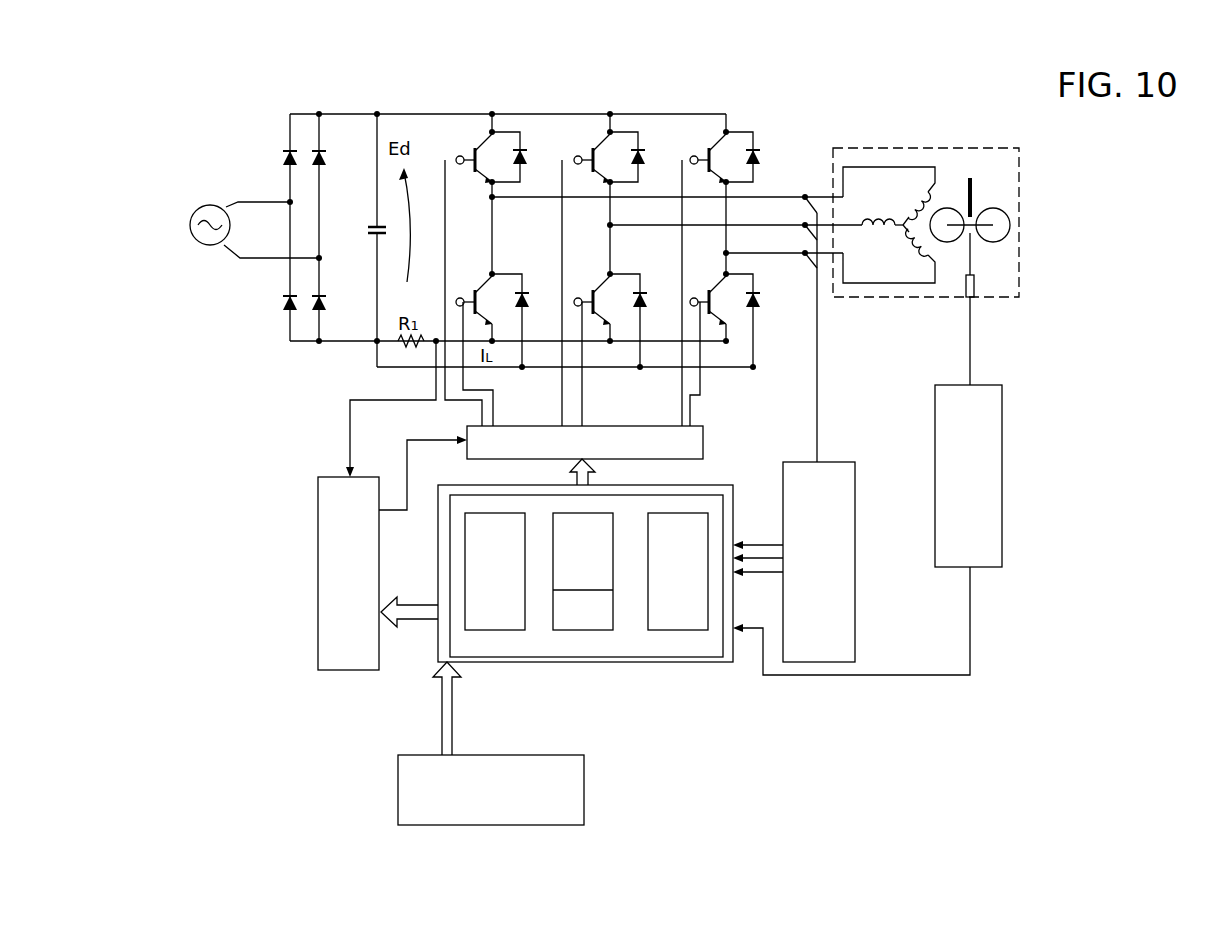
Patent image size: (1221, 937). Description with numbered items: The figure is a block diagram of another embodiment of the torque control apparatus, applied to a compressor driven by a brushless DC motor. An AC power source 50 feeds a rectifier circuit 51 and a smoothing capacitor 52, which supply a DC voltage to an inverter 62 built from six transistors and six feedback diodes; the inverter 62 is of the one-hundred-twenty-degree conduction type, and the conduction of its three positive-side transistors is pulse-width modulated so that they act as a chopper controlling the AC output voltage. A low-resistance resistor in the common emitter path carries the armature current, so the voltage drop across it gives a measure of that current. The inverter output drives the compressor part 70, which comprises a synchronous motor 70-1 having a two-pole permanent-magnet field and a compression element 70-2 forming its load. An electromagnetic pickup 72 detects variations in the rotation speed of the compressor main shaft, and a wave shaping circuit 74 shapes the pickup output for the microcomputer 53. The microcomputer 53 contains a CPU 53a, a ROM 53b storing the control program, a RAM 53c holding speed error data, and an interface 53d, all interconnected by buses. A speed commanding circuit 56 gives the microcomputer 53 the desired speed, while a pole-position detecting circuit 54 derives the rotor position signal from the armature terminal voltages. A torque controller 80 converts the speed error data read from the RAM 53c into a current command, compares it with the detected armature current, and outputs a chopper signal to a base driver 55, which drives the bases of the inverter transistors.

The AC power source 50 is at (201, 206).
The rectifier circuit 51 is at (284, 158).
The smoothing capacitor 52 is at (371, 231).
The inverter 62 is at (551, 105).
The compressor part 70 is at (870, 136).
The synchronous motor 70-1 is at (977, 193).
The compression element 70-2 is at (948, 242).
The electromagnetic pickup 72 is at (977, 283).
The wave shaping circuit 74 is at (1002, 462).
The pole-position detecting circuit 54 is at (855, 488).
The base driver 55 is at (703, 442).
The torque controller 80 is at (318, 660).
The microcomputer 53 is at (524, 617).
The CPU 53a is at (495, 630).
The ROM 53b is at (583, 630).
The RAM 53c is at (684, 630).
The interface 53d is at (438, 643).
The speed commanding circuit 56 is at (584, 782).